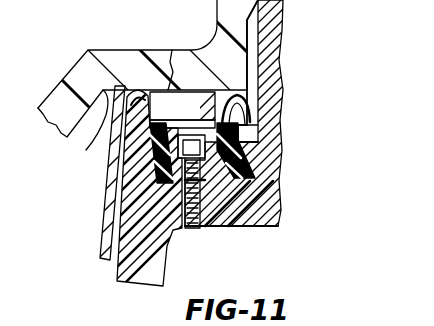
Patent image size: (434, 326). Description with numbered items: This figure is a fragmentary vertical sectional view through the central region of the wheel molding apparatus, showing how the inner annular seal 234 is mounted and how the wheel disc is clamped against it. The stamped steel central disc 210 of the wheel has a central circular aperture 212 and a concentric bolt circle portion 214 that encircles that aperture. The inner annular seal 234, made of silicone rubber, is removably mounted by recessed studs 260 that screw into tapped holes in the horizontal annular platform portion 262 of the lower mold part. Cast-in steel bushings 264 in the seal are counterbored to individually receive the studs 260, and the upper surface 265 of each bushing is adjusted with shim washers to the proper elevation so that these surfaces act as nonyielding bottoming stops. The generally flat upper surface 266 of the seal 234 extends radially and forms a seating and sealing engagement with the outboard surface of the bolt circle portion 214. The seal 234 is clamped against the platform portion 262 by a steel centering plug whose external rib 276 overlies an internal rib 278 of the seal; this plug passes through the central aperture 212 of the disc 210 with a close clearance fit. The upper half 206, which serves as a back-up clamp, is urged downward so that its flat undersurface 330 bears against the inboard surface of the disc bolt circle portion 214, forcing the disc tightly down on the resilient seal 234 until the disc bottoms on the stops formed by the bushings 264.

The upper half 206 is at (83, 43).
The bolt circle portion 214 is at (172, 50).
The flat undersurface 330 is at (99, 131).
The central disc 210 is at (105, 213).
The upper surface of bushing 265 is at (209, 113).
The upper surface of seal 266 is at (257, 110).
The steel bushing 264 is at (242, 203).
The annular platform portion 262 is at (270, 221).
The central circular aperture 212 is at (254, 121).
The external rib 276 is at (247, 148).
The internal rib 278 is at (276, 179).
The inner annular seal 234 is at (140, 152).
The recessed stud 260 is at (173, 230).